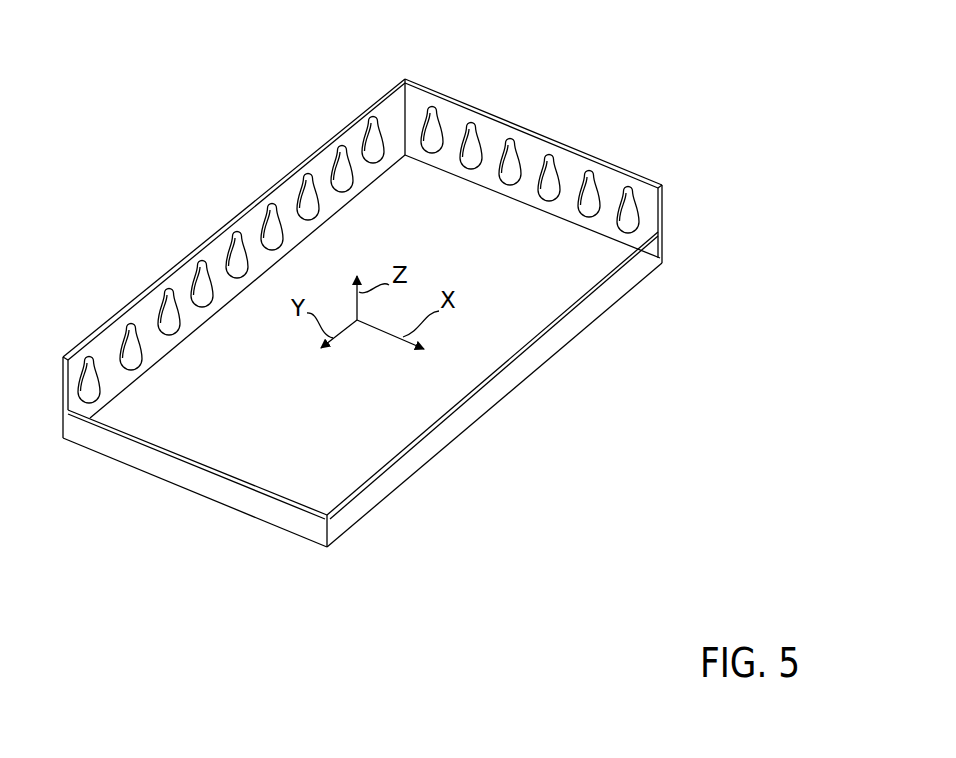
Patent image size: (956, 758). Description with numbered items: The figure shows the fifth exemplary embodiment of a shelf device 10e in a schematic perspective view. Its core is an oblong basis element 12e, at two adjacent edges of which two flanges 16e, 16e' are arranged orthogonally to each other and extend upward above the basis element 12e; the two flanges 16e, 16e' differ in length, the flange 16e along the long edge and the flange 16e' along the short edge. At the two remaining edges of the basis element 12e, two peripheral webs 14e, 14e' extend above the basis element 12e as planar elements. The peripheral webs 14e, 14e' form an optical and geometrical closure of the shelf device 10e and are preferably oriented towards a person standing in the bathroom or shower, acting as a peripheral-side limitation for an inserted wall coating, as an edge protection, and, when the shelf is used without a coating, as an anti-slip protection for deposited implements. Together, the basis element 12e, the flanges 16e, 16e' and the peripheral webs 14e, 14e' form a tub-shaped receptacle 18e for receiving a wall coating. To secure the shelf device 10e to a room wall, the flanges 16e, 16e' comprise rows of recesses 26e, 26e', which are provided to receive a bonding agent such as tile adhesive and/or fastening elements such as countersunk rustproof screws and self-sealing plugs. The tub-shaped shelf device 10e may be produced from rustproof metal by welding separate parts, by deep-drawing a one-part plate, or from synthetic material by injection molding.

The shelf device 10e is at (373, 304).
The basis element 12e is at (368, 437).
The peripheral web 14e is at (494, 391).
The peripheral web 14e' is at (195, 495).
The flange 16e is at (234, 258).
The flange 16e' is at (544, 147).
The tub-shaped receptacle 18e is at (485, 222).
The recesses 26e is at (231, 260).
The recesses 26e' is at (552, 164).